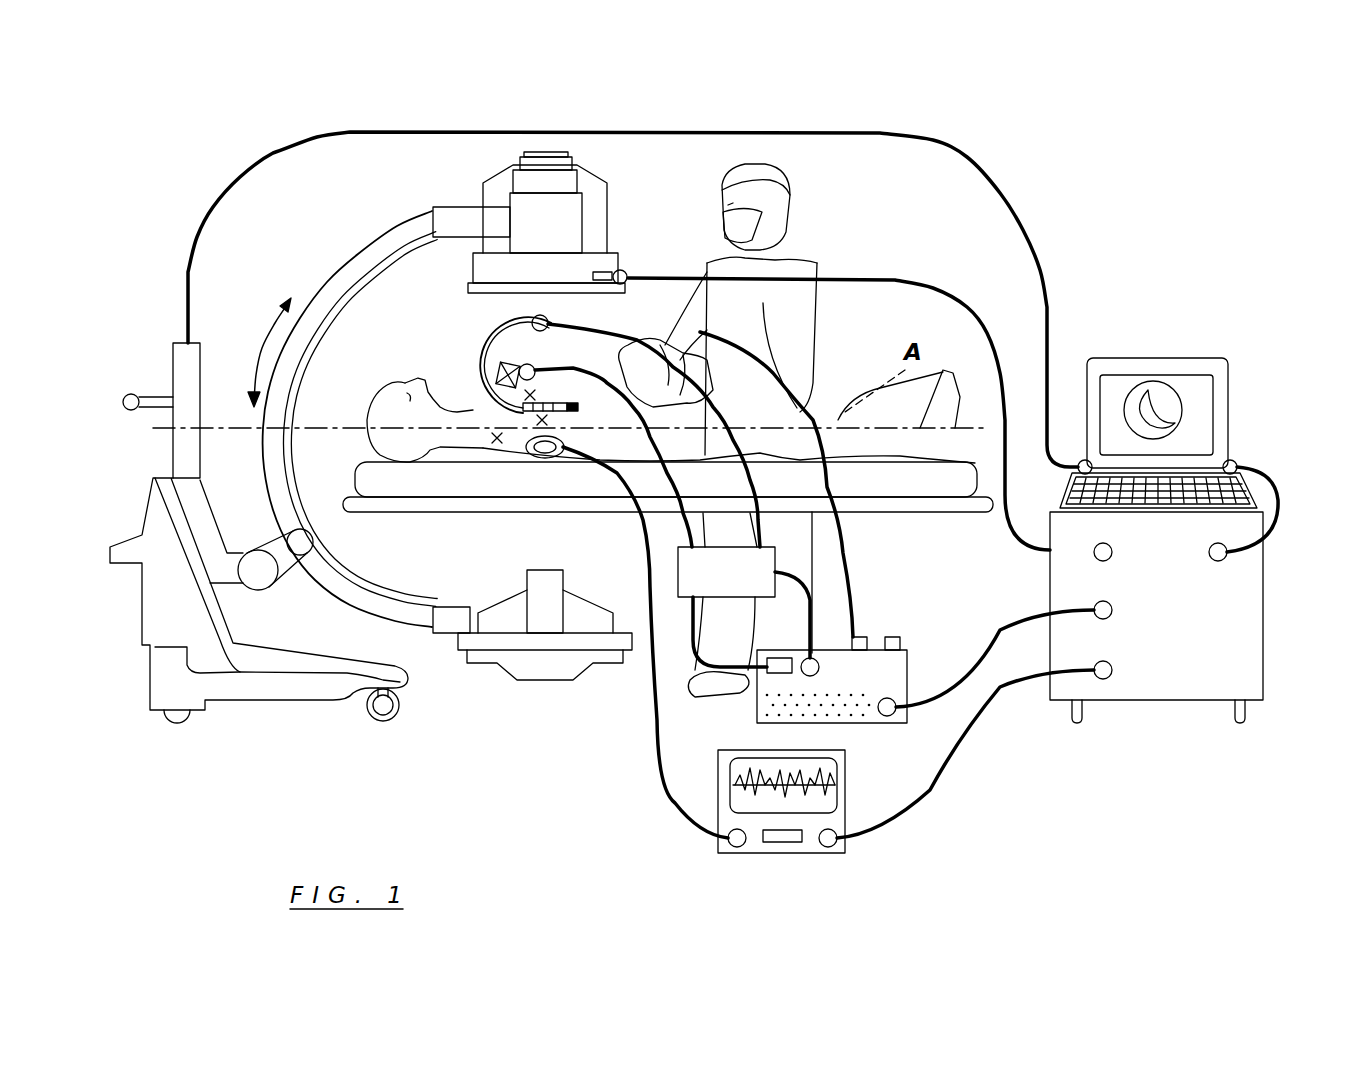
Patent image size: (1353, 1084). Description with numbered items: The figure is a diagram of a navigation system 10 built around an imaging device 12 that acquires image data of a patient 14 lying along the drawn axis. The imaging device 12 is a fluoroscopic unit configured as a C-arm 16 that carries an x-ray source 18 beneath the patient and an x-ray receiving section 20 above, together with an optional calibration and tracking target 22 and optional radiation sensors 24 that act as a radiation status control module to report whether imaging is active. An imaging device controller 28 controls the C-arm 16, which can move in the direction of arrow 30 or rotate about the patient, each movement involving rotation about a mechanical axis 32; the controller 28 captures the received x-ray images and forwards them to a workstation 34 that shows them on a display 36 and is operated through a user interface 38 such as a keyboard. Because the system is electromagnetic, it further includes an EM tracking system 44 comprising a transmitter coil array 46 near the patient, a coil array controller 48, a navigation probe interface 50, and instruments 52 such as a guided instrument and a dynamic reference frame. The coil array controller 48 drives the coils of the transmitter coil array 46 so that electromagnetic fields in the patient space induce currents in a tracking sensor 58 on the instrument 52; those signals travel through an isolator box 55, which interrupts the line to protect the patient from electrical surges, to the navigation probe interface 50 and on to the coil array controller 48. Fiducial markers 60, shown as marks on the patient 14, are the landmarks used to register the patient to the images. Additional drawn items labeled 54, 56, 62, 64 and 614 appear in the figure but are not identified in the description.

The navigation system 10 is at (1138, 180).
The imaging device 12 is at (638, 215).
The patient 14 is at (367, 420).
The C-arm 16 is at (327, 280).
The x-ray source 18 is at (543, 600).
The x-ray receiving section 20 is at (597, 183).
The calibration and tracking target 22 is at (487, 267).
The radiation sensors 24 is at (630, 266).
The imaging device controller 28 is at (172, 357).
The arrow 30 is at (263, 348).
The mechanical axis 32 is at (283, 548).
The workstation 34 is at (1163, 358).
The display 36 is at (1192, 420).
The user interface 38 is at (1163, 493).
The electromagnetic tracking system 44 is at (680, 330).
The transmitter coil array 46 is at (625, 285).
The coil array controller 48 is at (1160, 700).
The navigation probe interface 50 is at (907, 673).
The instruments 52 is at (483, 343).
The catheter marker 54 is at (497, 366).
The isolator box 55 is at (780, 557).
The patient table 56 is at (933, 517).
The tracking sensor 58 is at (578, 409).
The fiducial markers 60 is at (496, 442).
The ECG monitor 62 is at (793, 853).
The reference sensor ring 64 is at (560, 449).
The physician torso 614 is at (807, 247).